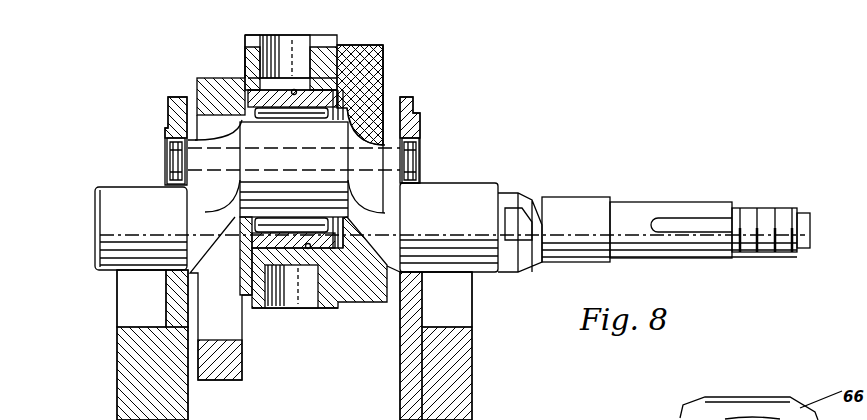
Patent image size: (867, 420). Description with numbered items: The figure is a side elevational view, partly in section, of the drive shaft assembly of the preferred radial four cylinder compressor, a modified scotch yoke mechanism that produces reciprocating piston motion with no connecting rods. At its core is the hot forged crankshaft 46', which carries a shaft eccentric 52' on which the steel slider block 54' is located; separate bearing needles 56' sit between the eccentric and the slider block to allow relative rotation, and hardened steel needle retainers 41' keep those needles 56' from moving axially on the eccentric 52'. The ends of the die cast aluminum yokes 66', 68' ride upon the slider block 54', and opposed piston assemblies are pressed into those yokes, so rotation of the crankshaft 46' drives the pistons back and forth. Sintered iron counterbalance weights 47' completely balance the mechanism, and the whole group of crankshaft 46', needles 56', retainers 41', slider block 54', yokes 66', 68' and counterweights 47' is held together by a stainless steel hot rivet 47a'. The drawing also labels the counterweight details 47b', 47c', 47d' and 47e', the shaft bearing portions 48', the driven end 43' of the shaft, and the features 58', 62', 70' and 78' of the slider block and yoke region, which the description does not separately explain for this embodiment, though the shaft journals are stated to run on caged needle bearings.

The counterbalance weight 47' is at (297, 258).
The hot rivet 47a' is at (372, 152).
The housing bore 47b' is at (294, 147).
The annular groove 47c' is at (293, 143).
The seal ring 47d' is at (301, 161).
The housing recess 47e' is at (294, 298).
The spindle 48' is at (428, 219).
The crankshaft 46' is at (669, 203).
The threaded shaft end 43' is at (771, 205).
The shaft eccentric 52' is at (267, 153).
The bearing needles 56' is at (290, 165).
The slider block 54' is at (227, 256).
The bearing cap 58' is at (327, 163).
The screw 62' is at (287, 169).
The screw bore 70' is at (285, 169).
The flange 78' is at (260, 186).
The yoke 66' is at (285, 298).
The yoke 68' is at (170, 108).
The needle retainer 41' is at (289, 88).